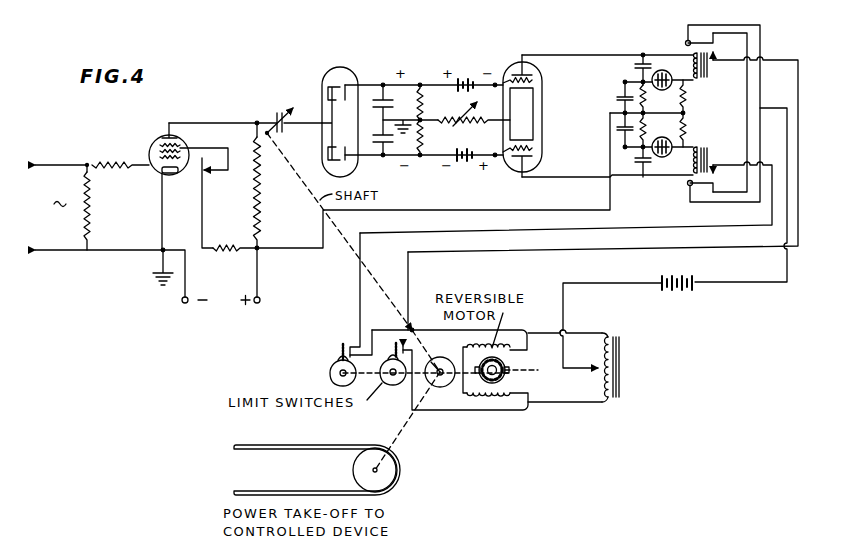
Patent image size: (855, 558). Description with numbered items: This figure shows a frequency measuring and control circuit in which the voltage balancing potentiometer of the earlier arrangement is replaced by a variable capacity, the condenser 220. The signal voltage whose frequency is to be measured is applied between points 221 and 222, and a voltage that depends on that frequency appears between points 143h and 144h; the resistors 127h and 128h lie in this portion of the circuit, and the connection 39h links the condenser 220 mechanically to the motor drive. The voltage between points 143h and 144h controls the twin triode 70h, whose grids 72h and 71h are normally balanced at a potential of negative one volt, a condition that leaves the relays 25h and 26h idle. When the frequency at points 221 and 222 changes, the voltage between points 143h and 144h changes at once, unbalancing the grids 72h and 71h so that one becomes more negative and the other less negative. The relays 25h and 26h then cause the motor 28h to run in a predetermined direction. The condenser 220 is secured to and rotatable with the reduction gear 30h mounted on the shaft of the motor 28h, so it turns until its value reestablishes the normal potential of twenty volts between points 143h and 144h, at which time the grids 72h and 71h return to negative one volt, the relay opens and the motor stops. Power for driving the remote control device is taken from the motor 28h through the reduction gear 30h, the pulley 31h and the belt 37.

The variable capacity 220 is at (287, 116).
The point 221 is at (61, 151).
The point 222 is at (99, 240).
The resistor 127h is at (420, 83).
The resistor 128h is at (420, 155).
The point 143h is at (495, 82).
The point 144h is at (495, 157).
The twin triode 70h is at (542, 99).
The grid 71h is at (536, 150).
The grid 72h is at (535, 79).
The relay 25h is at (708, 68).
The relay 26h is at (708, 158).
The shaft 39h is at (370, 278).
The motor 28h is at (515, 370).
The reduction gear 30h is at (440, 387).
The pulley 31h is at (399, 472).
The belt 37 is at (258, 452).